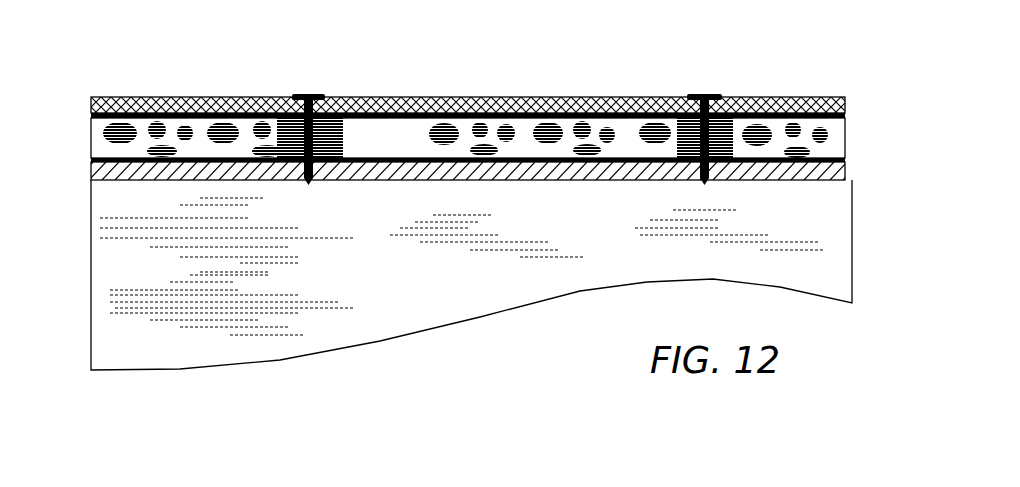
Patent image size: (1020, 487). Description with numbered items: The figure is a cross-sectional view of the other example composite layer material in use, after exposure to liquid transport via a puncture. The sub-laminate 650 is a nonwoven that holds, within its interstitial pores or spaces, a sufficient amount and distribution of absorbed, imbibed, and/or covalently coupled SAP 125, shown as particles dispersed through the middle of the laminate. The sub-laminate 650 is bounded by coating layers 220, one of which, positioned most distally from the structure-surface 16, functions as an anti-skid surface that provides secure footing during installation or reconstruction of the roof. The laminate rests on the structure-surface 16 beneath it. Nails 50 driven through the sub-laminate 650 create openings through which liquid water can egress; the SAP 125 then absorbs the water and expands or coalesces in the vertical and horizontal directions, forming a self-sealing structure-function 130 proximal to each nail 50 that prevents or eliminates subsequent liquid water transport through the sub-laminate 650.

The structure-surface 16 is at (160, 343).
The nail 50 is at (310, 96).
The SAP 125 is at (507, 130).
The self-sealing structure-function 130 is at (294, 94).
The coating layer 220 is at (845, 103).
The sub-laminate 650 is at (86, 118).